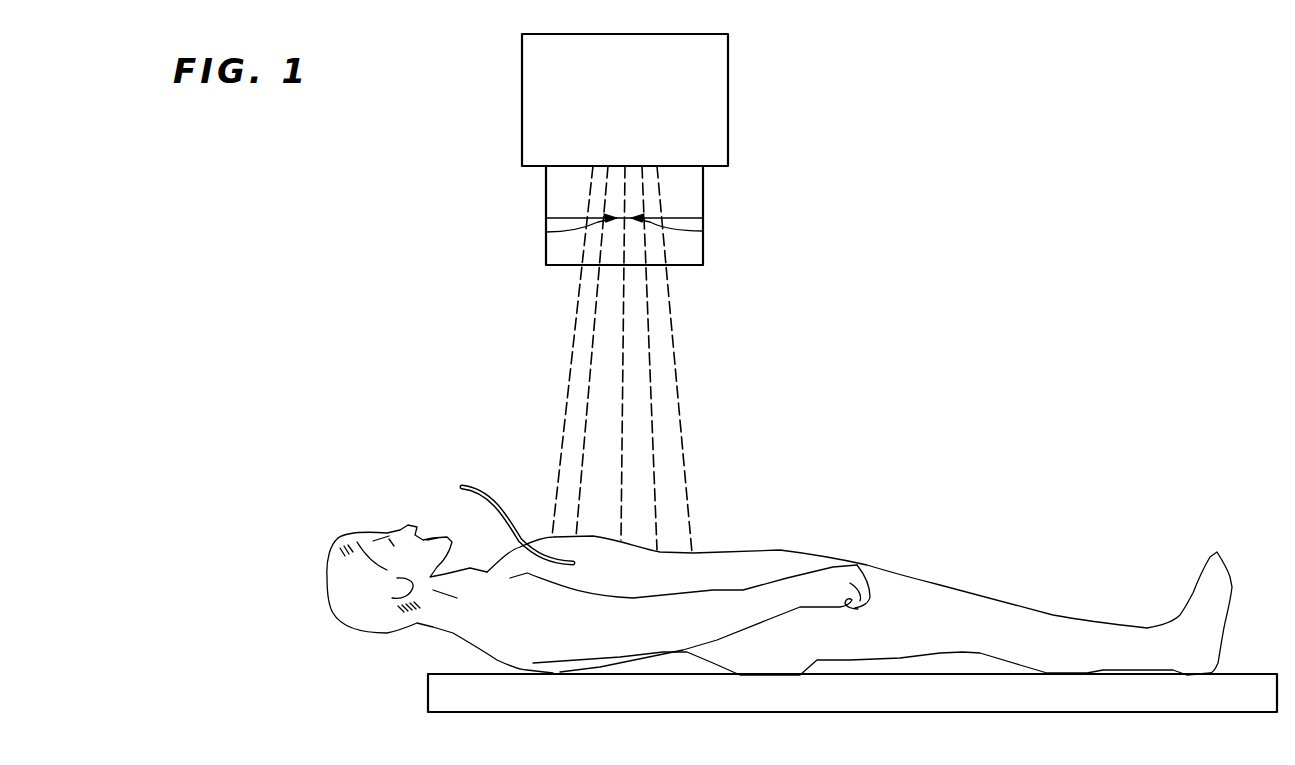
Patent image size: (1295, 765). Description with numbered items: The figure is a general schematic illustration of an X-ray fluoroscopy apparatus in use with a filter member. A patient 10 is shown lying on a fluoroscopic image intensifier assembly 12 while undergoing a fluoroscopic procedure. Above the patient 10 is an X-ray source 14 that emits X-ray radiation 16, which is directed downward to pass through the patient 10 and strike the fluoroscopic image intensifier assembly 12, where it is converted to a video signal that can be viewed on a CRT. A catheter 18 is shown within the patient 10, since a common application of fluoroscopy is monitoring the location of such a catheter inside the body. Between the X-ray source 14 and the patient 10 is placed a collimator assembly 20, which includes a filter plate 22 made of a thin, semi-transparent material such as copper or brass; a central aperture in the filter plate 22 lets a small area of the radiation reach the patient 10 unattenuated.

The patient 10 is at (720, 553).
The fluoroscopic image intensifier assembly 12 is at (670, 711).
The X-ray source 14 is at (728, 100).
The X-ray radiation 16 is at (673, 348).
The catheter 18 is at (473, 483).
The collimator assembly 20 is at (735, 199).
The filter plate 22 is at (703, 225).